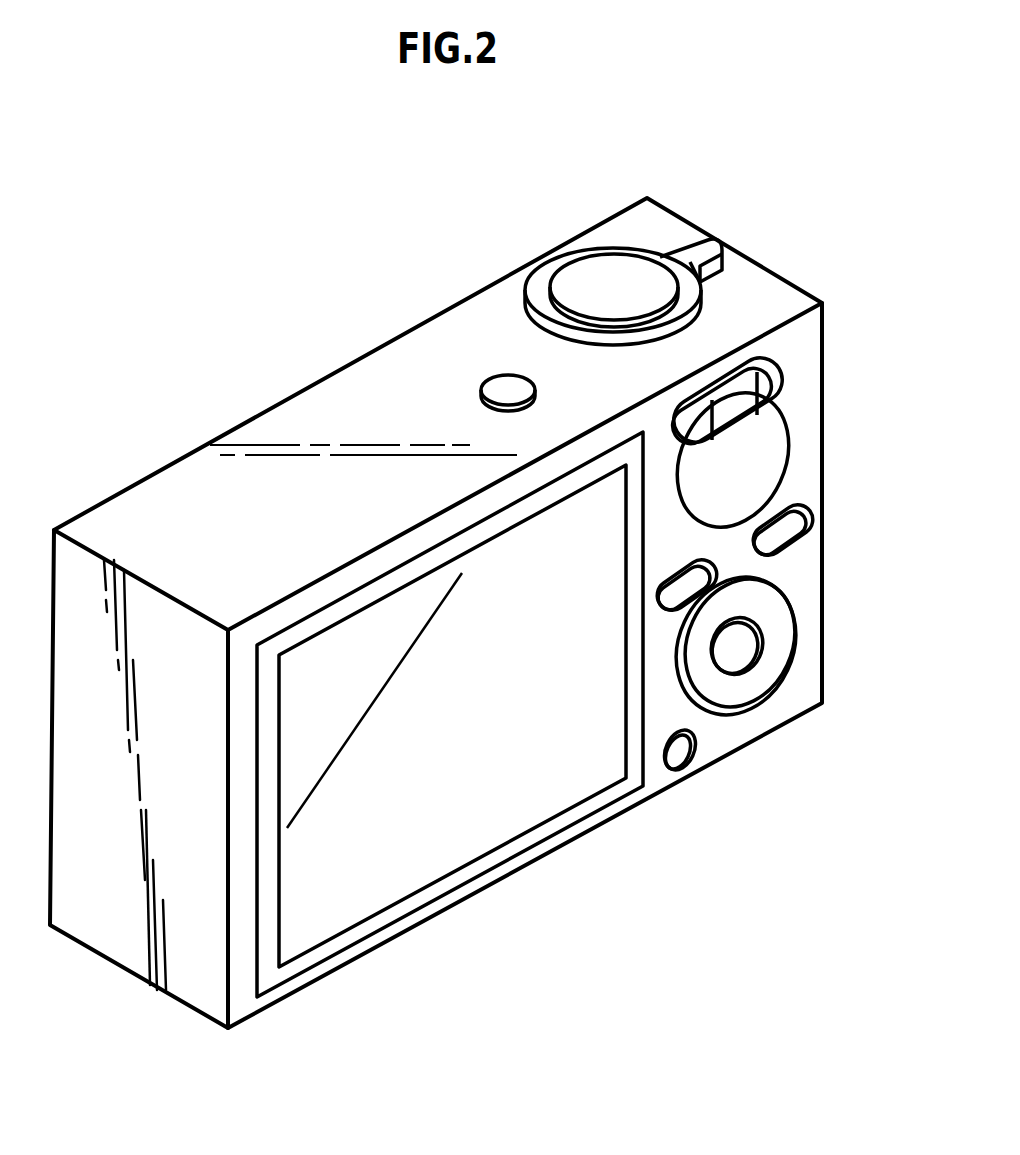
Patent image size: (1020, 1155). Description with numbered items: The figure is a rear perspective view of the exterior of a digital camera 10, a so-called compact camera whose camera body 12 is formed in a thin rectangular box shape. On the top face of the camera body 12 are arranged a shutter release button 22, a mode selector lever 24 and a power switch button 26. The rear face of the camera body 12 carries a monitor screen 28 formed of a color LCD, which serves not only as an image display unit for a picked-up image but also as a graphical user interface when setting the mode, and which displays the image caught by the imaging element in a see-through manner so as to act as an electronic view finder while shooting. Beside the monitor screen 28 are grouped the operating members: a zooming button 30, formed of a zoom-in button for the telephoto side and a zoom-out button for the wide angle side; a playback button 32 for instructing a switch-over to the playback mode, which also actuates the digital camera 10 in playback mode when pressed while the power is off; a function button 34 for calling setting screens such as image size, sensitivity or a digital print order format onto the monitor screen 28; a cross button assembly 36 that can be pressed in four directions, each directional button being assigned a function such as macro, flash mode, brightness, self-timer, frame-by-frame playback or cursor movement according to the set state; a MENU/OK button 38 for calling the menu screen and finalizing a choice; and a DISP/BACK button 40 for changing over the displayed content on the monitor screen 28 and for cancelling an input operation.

The digital camera 10 is at (218, 224).
The camera body 12 is at (163, 503).
The shutter release button 22 is at (650, 290).
The mode selector lever 24 is at (704, 255).
The power switch button 26 is at (505, 388).
The monitor screen 28 is at (455, 843).
The zooming button 30 is at (778, 383).
The playback button 32 is at (690, 590).
The function button 34 is at (800, 533).
The cross button assembly 36 is at (775, 640).
The MENU/OK button 38 is at (730, 642).
The DISP/BACK button 40 is at (680, 762).